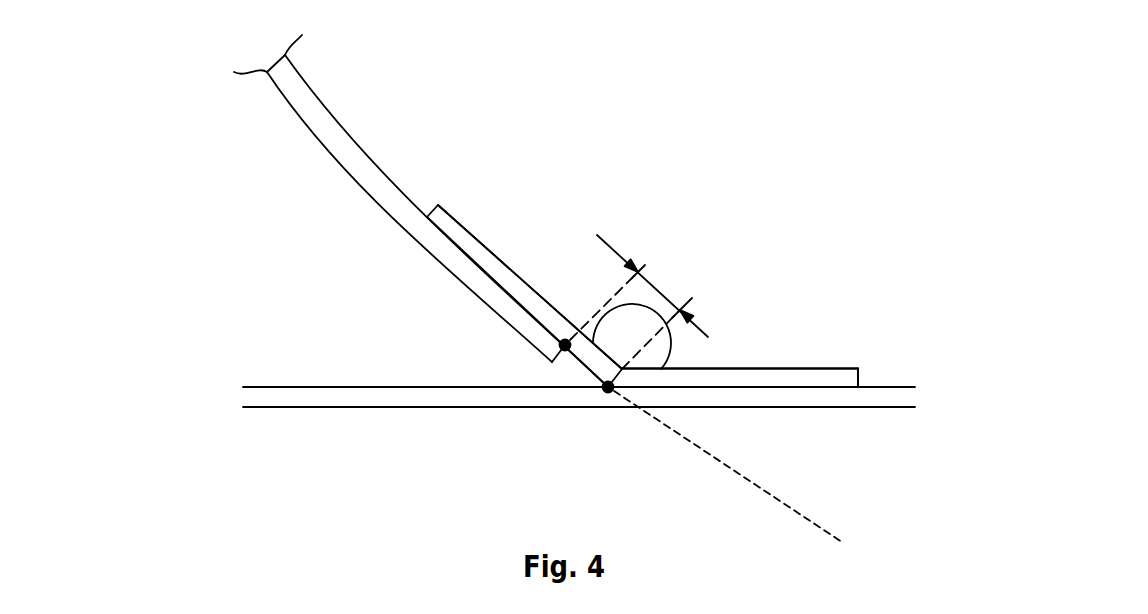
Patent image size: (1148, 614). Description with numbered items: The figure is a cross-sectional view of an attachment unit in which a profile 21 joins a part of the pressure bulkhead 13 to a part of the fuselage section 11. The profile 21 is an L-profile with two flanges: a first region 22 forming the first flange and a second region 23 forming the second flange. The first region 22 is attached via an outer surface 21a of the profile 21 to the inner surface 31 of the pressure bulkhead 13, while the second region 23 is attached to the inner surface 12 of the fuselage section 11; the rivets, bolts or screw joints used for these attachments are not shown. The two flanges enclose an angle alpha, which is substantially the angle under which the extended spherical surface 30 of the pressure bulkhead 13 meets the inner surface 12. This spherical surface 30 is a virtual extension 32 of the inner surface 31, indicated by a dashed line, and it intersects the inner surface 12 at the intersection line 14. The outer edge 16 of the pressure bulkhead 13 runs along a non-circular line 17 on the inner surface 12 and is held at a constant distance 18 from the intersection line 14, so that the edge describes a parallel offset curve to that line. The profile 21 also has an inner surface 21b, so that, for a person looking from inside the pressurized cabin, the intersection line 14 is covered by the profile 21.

The fuselage section 11 is at (508, 404).
The inner surface of the fuselage section 12 is at (301, 374).
The pressure bulkhead 13 is at (313, 118).
The intersection line 14 is at (608, 408).
The outer edge of the pressure bulkhead 16 is at (557, 384).
The non-circular line 17 is at (545, 345).
The distance 18 is at (663, 293).
The profile 21 is at (772, 377).
The outer surface of the profile 21a is at (476, 285).
The inner surface of the profile 21b is at (508, 246).
The first region of the profile 22 is at (476, 199).
The second region of the profile 23 is at (851, 355).
The spherical surface 30 is at (437, 202).
The inner surface of the pressure bulkhead 31 is at (366, 128).
The virtual extension 32 is at (801, 503).